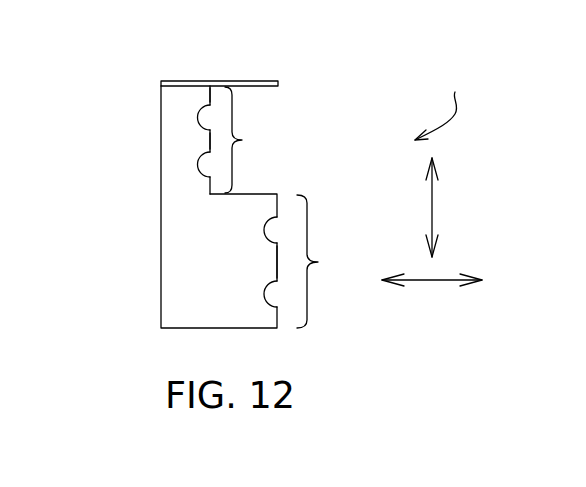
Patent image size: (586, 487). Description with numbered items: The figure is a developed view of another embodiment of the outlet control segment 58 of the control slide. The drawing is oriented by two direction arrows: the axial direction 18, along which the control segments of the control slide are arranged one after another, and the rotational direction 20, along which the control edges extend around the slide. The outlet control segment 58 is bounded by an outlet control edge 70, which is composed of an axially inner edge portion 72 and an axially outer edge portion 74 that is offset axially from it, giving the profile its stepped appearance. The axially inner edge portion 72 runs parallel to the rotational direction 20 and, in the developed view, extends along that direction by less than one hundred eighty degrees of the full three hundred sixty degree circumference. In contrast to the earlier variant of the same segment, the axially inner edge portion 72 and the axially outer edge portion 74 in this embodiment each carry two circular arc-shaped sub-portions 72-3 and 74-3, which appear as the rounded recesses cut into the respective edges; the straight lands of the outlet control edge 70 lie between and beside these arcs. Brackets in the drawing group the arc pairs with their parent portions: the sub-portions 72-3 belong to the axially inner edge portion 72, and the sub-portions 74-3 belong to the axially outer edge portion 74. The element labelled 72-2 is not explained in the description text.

The axial direction 18 is at (444, 280).
The rotational direction 20 is at (432, 220).
The outlet control segment 58 is at (441, 103).
The outlet control edge 70 is at (210, 140).
The axially inner edge portion 72 is at (247, 140).
The first engagement surface 72-2 is at (210, 95).
The circular arc-shaped sub-portions 72-3 is at (197, 117).
The axially outer edge portion 74 is at (278, 83).
The circular arc-shaped sub-portions 74-3 is at (264, 230).